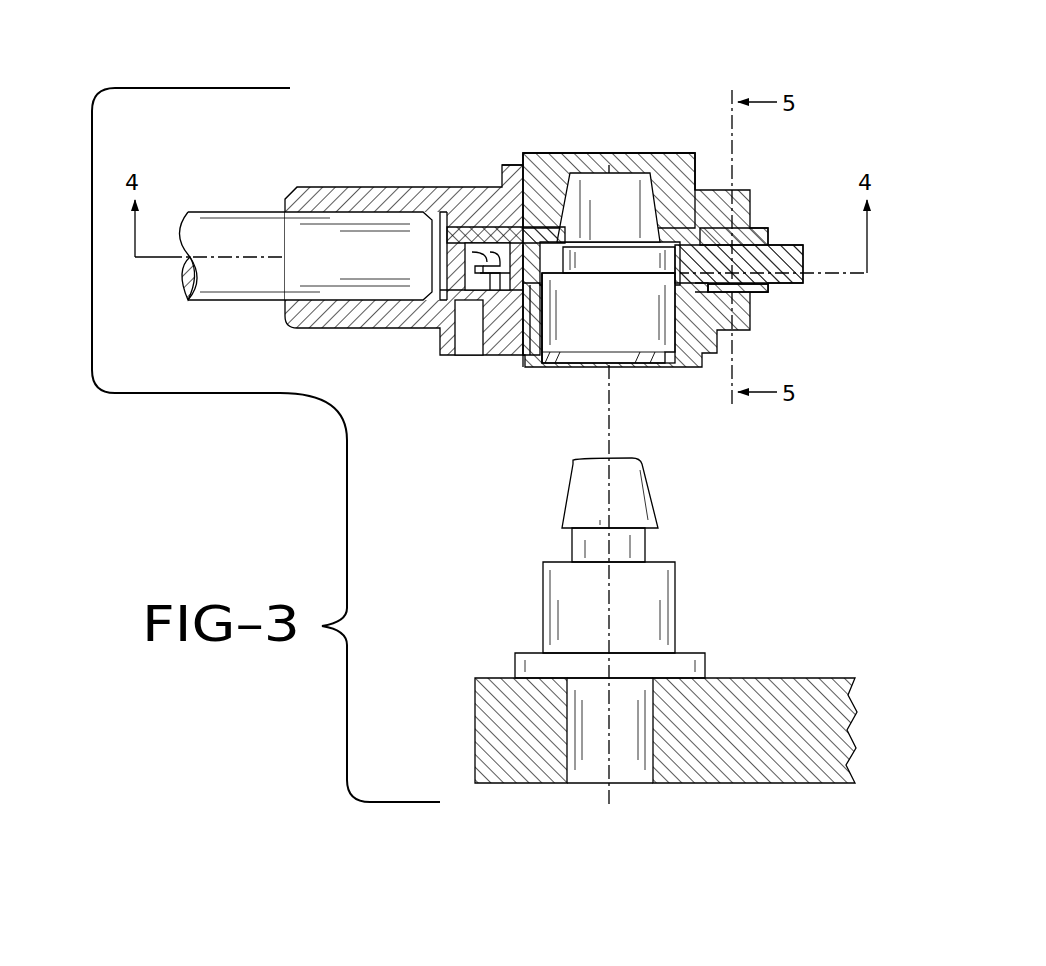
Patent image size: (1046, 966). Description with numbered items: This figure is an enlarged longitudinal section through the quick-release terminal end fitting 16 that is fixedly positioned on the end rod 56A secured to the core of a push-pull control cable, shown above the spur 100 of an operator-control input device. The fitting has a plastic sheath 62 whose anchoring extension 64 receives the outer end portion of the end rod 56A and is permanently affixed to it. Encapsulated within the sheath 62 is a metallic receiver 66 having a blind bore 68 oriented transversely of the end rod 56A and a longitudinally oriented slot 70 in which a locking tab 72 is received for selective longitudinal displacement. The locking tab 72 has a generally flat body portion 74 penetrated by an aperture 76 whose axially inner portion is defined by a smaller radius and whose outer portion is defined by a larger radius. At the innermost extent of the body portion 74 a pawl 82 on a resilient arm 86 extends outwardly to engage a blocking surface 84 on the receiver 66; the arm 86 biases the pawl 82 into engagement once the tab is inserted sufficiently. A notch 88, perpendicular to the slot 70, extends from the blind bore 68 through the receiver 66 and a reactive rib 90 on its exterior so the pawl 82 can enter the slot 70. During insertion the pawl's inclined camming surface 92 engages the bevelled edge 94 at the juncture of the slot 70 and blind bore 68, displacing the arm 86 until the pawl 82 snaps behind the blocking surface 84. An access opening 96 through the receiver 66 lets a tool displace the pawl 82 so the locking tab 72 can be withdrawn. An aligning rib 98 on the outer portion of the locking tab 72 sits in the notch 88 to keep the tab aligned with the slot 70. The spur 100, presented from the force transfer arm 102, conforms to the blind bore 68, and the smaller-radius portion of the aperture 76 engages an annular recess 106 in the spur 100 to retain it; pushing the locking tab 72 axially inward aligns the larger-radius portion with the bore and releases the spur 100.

The terminal end fitting 16 is at (508, 136).
The end rod 56A is at (212, 235).
The plastic sheath 62 is at (544, 306).
The anchoring extension 64 is at (353, 322).
The receiver 66 is at (540, 160).
The blind bore 68 is at (623, 315).
The slot 70 is at (482, 250).
The locking tab 72 is at (808, 243).
The body portion 74 is at (684, 252).
The aperture 76 is at (608, 258).
The pawl 82 is at (470, 268).
The blocking surface 84 is at (492, 290).
The resilient arm 86 is at (525, 333).
The notch 88 is at (702, 290).
The reactive rib 90 is at (763, 237).
The inclined camming surface 92 is at (480, 283).
The bevelled edge 94 is at (555, 292).
The access opening 96 is at (476, 342).
The aligning rib 98 is at (770, 282).
The spur 100 is at (643, 610).
The force transfer arm 102 is at (806, 676).
The annular recess 106 is at (647, 546).